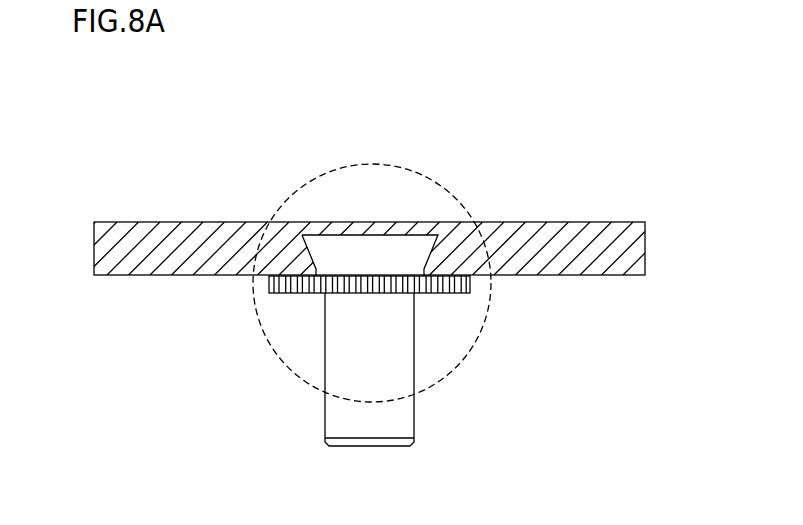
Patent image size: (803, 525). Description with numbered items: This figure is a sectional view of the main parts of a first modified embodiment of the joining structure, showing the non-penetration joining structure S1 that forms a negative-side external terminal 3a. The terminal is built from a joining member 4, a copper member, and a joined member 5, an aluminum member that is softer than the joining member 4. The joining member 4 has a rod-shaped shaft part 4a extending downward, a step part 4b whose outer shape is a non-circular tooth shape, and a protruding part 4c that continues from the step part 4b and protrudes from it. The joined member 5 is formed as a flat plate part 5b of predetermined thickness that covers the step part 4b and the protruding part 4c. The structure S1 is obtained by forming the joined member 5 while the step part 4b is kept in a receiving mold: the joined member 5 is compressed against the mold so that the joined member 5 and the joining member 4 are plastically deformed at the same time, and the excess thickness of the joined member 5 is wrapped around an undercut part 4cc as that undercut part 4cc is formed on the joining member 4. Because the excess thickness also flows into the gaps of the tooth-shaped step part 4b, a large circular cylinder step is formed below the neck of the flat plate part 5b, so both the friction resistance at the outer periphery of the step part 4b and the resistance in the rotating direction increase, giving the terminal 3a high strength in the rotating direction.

The negative-side external terminal 3a is at (512, 212).
The joined member 5 is at (192, 253).
The flat plate part 5b is at (240, 242).
The joining member 4 is at (468, 316).
The shaft part 4a is at (343, 421).
The step part 4b is at (383, 283).
The protruding part 4c is at (380, 250).
The undercut part 4cc is at (325, 303).
The non-penetration joining structure S1 is at (458, 352).